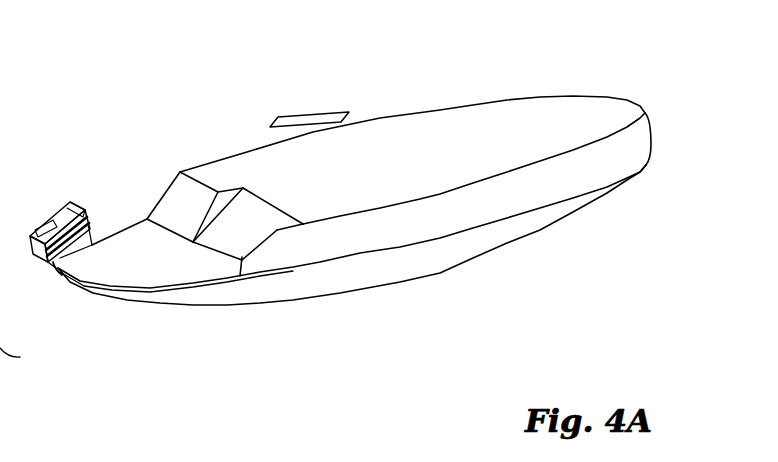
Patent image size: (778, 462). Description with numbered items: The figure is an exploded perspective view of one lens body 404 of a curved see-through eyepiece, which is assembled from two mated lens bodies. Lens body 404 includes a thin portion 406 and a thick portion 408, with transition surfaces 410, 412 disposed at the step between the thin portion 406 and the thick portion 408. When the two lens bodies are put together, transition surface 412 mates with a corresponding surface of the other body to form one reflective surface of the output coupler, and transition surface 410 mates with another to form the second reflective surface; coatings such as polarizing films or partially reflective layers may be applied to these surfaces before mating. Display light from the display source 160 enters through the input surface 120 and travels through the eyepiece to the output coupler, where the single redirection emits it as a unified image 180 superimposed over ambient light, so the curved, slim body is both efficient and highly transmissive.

The lens body 404 is at (186, 70).
The thick portion 408 is at (397, 181).
The thin portion 406 is at (168, 265).
The transition surface 412 is at (177, 205).
The transition surface 410 is at (243, 240).
The display source 160 is at (70, 208).
The input surface 120 is at (62, 265).
The unified image 180 is at (338, 108).